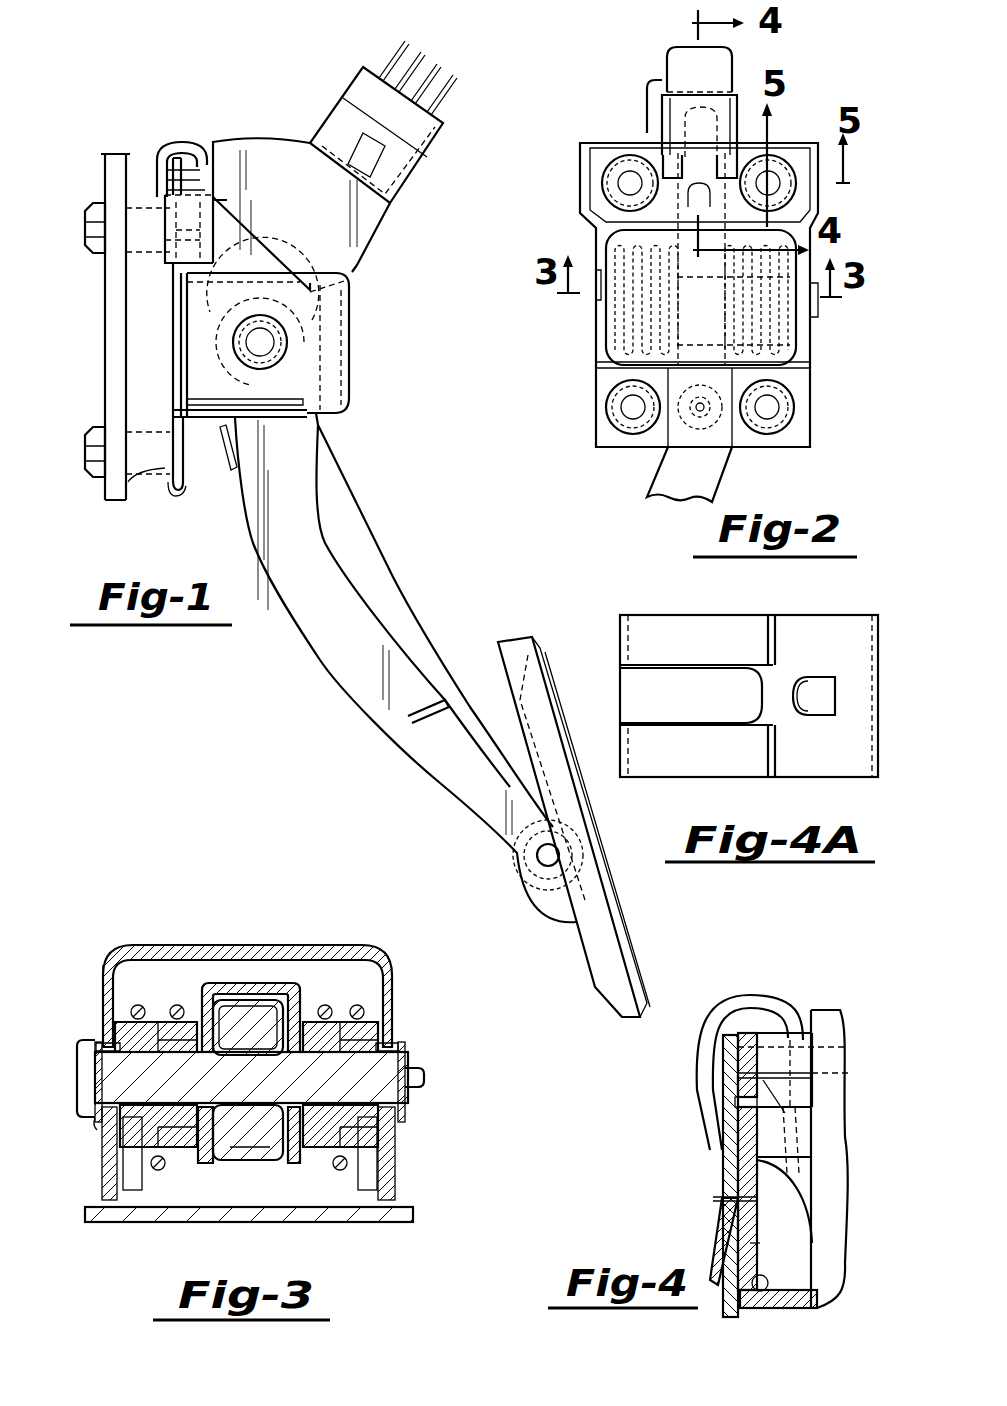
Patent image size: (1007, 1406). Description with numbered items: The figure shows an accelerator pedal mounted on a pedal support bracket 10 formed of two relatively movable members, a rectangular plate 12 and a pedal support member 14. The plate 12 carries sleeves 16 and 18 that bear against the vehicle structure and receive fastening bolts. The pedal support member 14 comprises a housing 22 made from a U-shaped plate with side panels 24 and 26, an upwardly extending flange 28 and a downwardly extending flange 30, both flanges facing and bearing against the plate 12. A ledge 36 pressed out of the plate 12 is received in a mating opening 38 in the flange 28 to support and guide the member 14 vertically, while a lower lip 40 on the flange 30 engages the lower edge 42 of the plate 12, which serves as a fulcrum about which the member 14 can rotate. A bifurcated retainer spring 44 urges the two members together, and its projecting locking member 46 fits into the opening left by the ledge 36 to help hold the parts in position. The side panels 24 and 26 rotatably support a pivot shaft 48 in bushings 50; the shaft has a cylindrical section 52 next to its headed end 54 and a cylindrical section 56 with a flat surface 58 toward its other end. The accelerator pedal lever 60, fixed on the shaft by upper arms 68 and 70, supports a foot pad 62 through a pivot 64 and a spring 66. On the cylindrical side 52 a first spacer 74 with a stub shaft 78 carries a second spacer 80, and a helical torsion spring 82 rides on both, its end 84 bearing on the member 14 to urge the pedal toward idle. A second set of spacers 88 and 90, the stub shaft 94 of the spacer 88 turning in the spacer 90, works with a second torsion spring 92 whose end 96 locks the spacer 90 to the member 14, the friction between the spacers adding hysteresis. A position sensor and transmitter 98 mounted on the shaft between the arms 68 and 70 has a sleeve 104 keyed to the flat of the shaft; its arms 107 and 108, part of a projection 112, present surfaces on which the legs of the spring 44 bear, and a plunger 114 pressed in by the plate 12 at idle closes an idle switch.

In FIG. 1, the pedal support bracket 10 is at (366, 333).
In FIG. 2, the pedal support bracket 10 is at (585, 340).
In FIG. 3, the pedal support bracket 10 is at (265, 954).
In FIG. 1, the plate 12 is at (173, 330).
In FIG. 3, the plate 12 is at (413, 1208).
In FIG. 4, the plate 12 is at (723, 1316).
In FIG. 1, the pedal support member 14 is at (360, 305).
In FIG. 3, the pedal support member 14 is at (359, 946).
In FIG. 4, the pedal support member 14 is at (794, 1312).
In FIG. 1, the sleeve 16 is at (147, 197).
In FIG. 1, the sleeve 18 is at (137, 507).
In FIG. 1, the housing 22 is at (330, 410).
In FIG. 3, the housing 22 is at (172, 946).
In FIG. 3, the side panel 24 is at (103, 973).
In FIG. 3, the side panel 26 is at (392, 1013).
In FIG. 4, the upwardly extending flange 28 is at (760, 1291).
In FIG. 1, the downwardly extending flange 30 is at (183, 487).
In FIG. 4, the ledge 36 is at (757, 1217).
In FIG. 4, the mating opening 38 is at (760, 1243).
In FIG. 1, the lower lip 40 is at (169, 493).
In FIG. 1, the lower edge 42 is at (174, 493).
In FIG. 1, the bifurcated retainer spring 44 is at (180, 142).
In FIG. 4A, the bifurcated retainer spring 44 is at (690, 780).
In FIG. 4, the bifurcated retainer spring 44 is at (746, 994).
In FIG. 4A, the projecting locking member 46 is at (817, 697).
In FIG. 4, the projecting locking member 46 is at (722, 1220).
In FIG. 3, the pivot shaft 48 is at (93, 1118).
In FIG. 3, the bushings 50 is at (107, 1118).
In FIG. 3, the cylindrical section 52 is at (163, 1096).
In FIG. 3, the headed end 54 is at (80, 1050).
In FIG. 3, the cylindrical section 56 is at (425, 1085).
In FIG. 3, the flat surface 58 is at (406, 1070).
In FIG. 1, the accelerator pedal lever 60 is at (400, 617).
In FIG. 3, the accelerator pedal lever 60 is at (242, 1017).
In FIG. 1, the foot pad 62 is at (553, 670).
In FIG. 1, the pivot 64 is at (548, 855).
In FIG. 1, the spring 66 is at (420, 712).
In FIG. 3, the upper arm 68 is at (297, 1000).
In FIG. 3, the upper arm 70 is at (204, 985).
In FIG. 3, the first spacer 74 is at (100, 1200).
In FIG. 3, the stub shaft 78 is at (234, 1157).
In FIG. 3, the second spacer 80 is at (180, 1163).
In FIG. 3, the helical torsion spring 82 is at (136, 1006).
In FIG. 1, the spring end 84 is at (173, 298).
In FIG. 3, the spring end 84 is at (130, 1192).
In FIG. 3, the spacer 88 is at (325, 1147).
In FIG. 3, the spacer 90 is at (380, 1037).
In FIG. 3, the second torsion spring 92 is at (362, 1008).
In FIG. 3, the stub shaft 94 is at (385, 1118).
In FIG. 3, the spring end 96 is at (368, 1192).
In FIG. 1, the position sensor and transmitter 98 is at (457, 113).
In FIG. 3, the position sensor and transmitter 98 is at (264, 1005).
In FIG. 4, the position sensor and transmitter 98 is at (840, 1012).
In FIG. 3, the sleeve 104 is at (264, 1148).
In FIG. 1, the arm 107 is at (192, 180).
In FIG. 4, the arm 108 is at (757, 1087).
In FIG. 4, the projection 112 is at (743, 1105).
In FIG. 4, the plunger 114 is at (757, 1062).